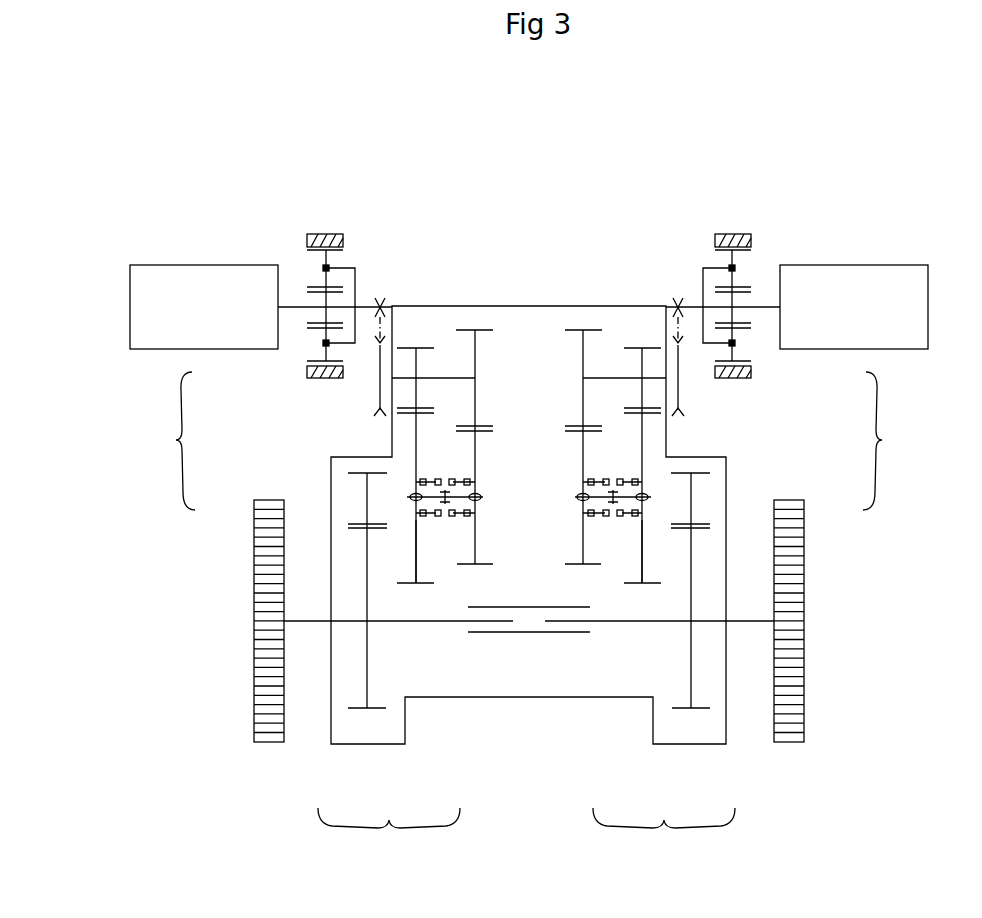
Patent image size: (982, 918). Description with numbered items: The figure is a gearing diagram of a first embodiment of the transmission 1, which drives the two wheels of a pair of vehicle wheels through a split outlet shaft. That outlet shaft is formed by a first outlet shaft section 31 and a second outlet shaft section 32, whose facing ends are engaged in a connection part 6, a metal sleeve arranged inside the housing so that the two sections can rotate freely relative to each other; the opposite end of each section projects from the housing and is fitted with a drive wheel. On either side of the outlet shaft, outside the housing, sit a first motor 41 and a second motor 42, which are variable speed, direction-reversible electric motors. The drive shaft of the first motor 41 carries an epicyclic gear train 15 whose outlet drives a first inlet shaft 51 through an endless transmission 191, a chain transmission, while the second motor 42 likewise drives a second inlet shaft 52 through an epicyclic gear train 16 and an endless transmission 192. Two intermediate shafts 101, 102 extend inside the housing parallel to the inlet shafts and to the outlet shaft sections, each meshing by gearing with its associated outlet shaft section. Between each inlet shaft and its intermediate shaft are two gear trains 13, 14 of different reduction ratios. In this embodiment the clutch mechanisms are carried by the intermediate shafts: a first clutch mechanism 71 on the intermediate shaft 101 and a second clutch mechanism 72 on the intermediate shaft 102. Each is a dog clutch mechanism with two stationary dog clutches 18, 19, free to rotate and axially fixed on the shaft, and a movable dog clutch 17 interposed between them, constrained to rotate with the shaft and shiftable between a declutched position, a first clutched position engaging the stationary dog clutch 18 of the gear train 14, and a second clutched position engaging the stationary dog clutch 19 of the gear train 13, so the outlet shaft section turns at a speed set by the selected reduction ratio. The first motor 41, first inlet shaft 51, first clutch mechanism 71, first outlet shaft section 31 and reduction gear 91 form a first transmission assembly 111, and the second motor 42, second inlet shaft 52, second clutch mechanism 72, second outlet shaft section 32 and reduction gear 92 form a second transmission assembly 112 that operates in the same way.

The transmission 1 is at (528, 413).
The first motor 41 is at (202, 262).
The second motor 42 is at (857, 262).
The epicyclic gear train 15 is at (270, 266).
The epicyclic gear train 16 is at (776, 263).
The endless transmission 191 is at (382, 291).
The endless transmission 192 is at (676, 291).
The first inlet shaft 51 is at (448, 375).
The second inlet shaft 52 is at (610, 375).
The first clutch mechanism 71 is at (171, 441).
The second clutch mechanism 72 is at (898, 441).
The stationary dog clutch 18 is at (460, 474).
The movable dog clutch 17 is at (432, 476).
The stationary dog clutch 19 is at (412, 482).
The intermediate shaft 101 is at (316, 582).
The intermediate shaft 102 is at (749, 583).
The first transmission assembly 111 is at (238, 590).
The second transmission assembly 112 is at (825, 590).
The gear train 13 is at (416, 590).
The gear train 14 is at (475, 570).
The reduction gear 91 is at (389, 839).
The reduction gear 92 is at (664, 839).
The connection part 6 is at (530, 636).
The first outlet shaft section 31 is at (312, 622).
The second outlet shaft section 32 is at (747, 622).